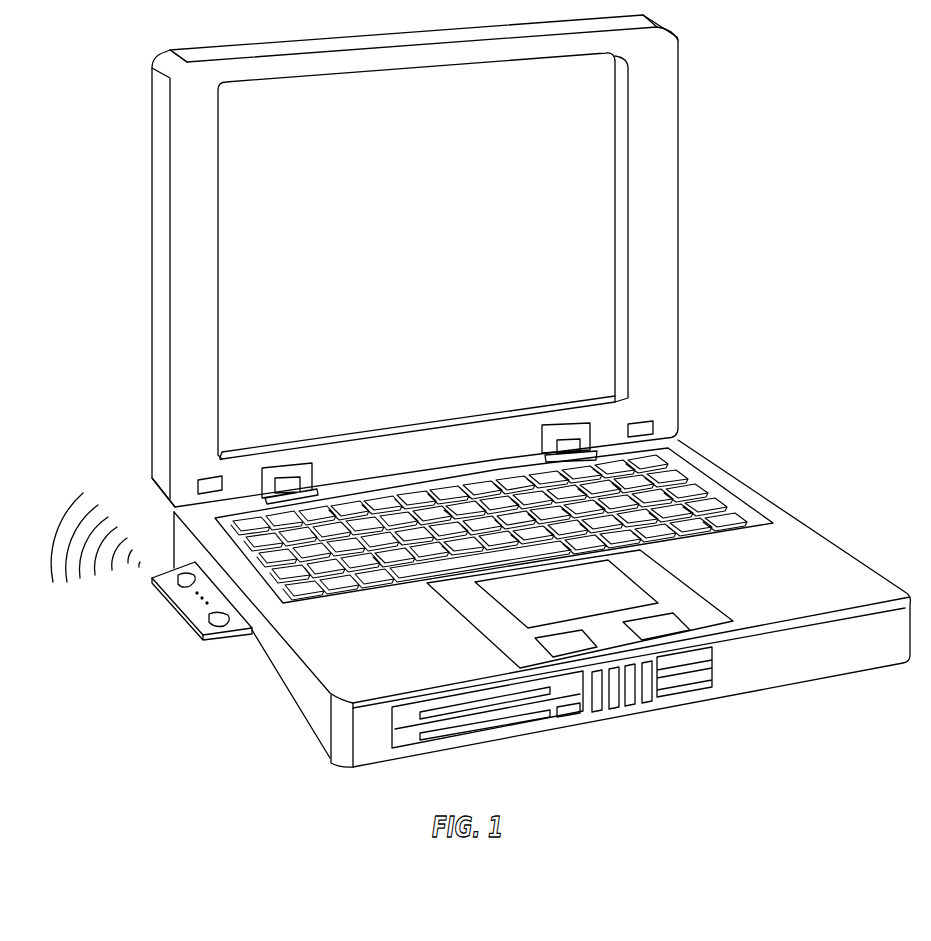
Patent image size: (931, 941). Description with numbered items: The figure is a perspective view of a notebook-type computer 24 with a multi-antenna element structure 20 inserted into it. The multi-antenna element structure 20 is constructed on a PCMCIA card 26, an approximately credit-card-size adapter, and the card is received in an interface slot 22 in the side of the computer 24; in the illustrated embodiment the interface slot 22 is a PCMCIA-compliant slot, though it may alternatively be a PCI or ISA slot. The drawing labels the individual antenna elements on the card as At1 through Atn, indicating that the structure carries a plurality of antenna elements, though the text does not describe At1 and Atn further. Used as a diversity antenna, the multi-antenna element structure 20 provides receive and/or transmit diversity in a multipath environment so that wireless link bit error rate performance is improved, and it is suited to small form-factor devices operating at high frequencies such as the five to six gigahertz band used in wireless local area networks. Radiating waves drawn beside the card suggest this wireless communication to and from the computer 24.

The multi-antenna element structure 20 is at (480, 400).
The interface slot 22 is at (171, 637).
The computer 24 is at (308, 735).
The PCMCIA card 26 is at (160, 626).
The first antenna element At1 is at (176, 582).
The nth antenna element Atn is at (167, 612).